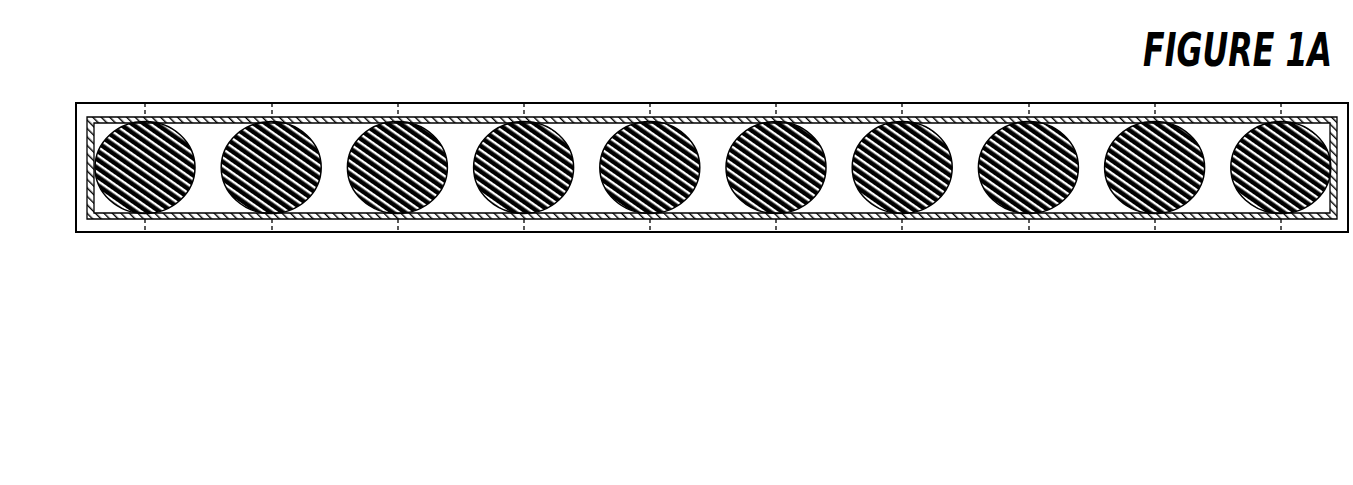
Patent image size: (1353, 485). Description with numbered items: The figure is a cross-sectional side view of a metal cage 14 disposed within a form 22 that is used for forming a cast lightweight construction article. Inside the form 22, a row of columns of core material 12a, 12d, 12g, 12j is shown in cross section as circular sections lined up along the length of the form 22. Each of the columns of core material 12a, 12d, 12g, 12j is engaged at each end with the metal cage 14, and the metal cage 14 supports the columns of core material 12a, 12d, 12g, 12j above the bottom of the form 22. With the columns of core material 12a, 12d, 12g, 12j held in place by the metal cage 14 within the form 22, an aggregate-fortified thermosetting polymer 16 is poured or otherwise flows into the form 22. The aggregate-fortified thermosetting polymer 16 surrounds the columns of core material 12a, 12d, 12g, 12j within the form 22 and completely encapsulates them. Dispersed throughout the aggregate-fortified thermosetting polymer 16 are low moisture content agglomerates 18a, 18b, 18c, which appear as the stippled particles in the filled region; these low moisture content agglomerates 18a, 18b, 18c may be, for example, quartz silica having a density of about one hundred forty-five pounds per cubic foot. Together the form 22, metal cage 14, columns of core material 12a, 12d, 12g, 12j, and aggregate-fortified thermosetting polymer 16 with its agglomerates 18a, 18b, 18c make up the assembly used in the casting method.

The column of core material 12a is at (178, 203).
The column of core material 12d is at (556, 203).
The column of core material 12g is at (935, 203).
The column of core material 12j is at (1311, 203).
The metal cage 14 is at (701, 109).
The aggregate-fortified thermosetting polymer 16 is at (296, 111).
The low moisture content agglomerate 18a is at (84, 111).
The low moisture content agglomerate 18b is at (131, 112).
The low moisture content agglomerate 18c is at (180, 114).
The form 22 is at (460, 104).